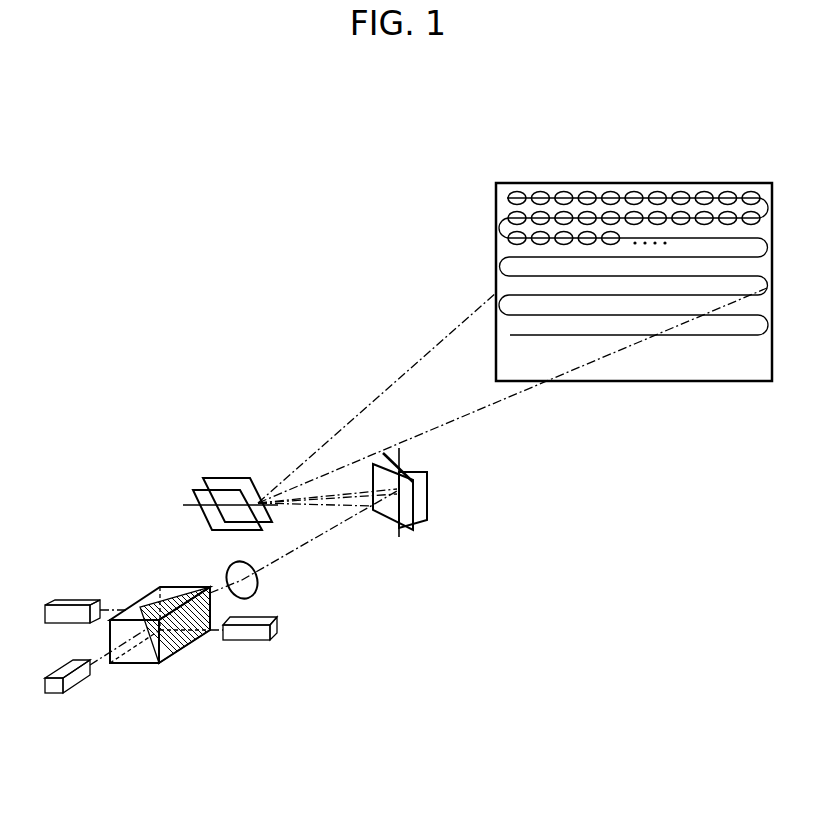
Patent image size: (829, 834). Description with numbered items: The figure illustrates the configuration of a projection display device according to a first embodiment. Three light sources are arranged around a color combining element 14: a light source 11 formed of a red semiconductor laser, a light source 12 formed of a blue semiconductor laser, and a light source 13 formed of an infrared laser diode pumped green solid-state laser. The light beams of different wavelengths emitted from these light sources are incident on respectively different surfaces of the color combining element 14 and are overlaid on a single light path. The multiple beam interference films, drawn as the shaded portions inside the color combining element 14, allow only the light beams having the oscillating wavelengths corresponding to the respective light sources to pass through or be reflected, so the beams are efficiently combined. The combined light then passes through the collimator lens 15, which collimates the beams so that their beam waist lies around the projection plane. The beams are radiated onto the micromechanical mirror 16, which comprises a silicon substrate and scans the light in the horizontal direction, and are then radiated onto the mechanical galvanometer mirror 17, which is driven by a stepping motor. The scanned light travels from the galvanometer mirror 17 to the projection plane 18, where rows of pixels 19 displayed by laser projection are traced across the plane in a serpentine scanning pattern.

The light source 11 is at (277, 630).
The light source 12 is at (75, 602).
The light source 13 is at (83, 688).
The color combining element 14 is at (177, 652).
The collimator lens 15 is at (260, 582).
The micromechanical mirror 16 is at (427, 508).
The galvanometer mirror 17 is at (193, 492).
The projection plane 18 is at (677, 382).
The pixels 19 is at (514, 191).